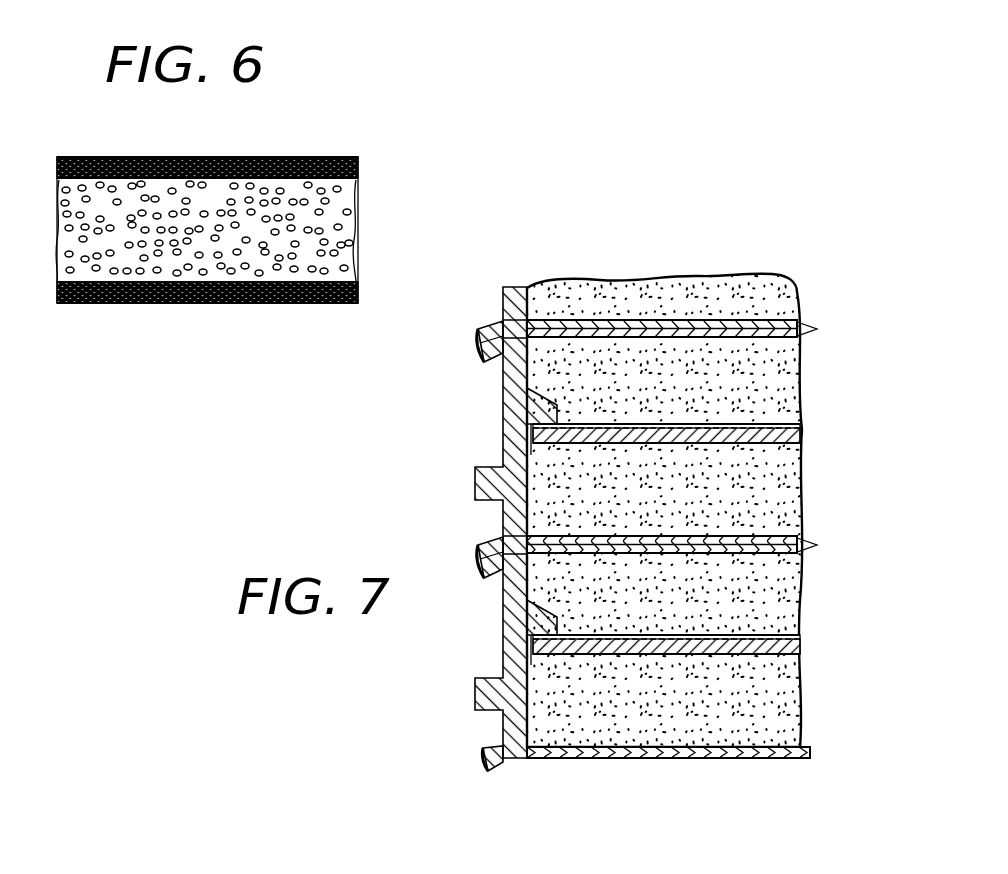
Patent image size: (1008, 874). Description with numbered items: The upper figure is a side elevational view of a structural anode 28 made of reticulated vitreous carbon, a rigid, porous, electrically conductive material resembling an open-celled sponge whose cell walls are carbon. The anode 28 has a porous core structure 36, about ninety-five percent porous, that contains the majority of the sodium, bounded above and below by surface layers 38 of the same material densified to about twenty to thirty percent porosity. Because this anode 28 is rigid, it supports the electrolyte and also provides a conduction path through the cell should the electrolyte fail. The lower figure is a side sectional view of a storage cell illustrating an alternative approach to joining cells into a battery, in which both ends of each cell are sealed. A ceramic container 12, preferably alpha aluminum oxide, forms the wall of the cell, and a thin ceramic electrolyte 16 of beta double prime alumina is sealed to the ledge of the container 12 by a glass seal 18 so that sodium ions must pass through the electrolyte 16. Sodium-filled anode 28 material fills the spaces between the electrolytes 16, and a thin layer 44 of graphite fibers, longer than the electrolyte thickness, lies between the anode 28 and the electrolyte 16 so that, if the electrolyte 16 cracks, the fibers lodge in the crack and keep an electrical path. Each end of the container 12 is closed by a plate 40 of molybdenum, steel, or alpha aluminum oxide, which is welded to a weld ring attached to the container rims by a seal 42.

In FIG. 7, the container 12 is at (503, 393).
In FIG. 7, the ceramic electrolyte 16 is at (797, 437).
In FIG. 7, the glass seal 18 is at (528, 412).
In FIG. 6, the anode 28 is at (367, 156).
In FIG. 7, the anode 28 is at (782, 380).
In FIG. 6, the porous core structure 36 is at (138, 252).
In FIG. 6, the surface layers 38 is at (247, 157).
In FIG. 7, the plate 40 is at (810, 328).
In FIG. 7, the seal 42 is at (492, 325).
In FIG. 7, the thin layer of graphite fibers 44 is at (770, 424).